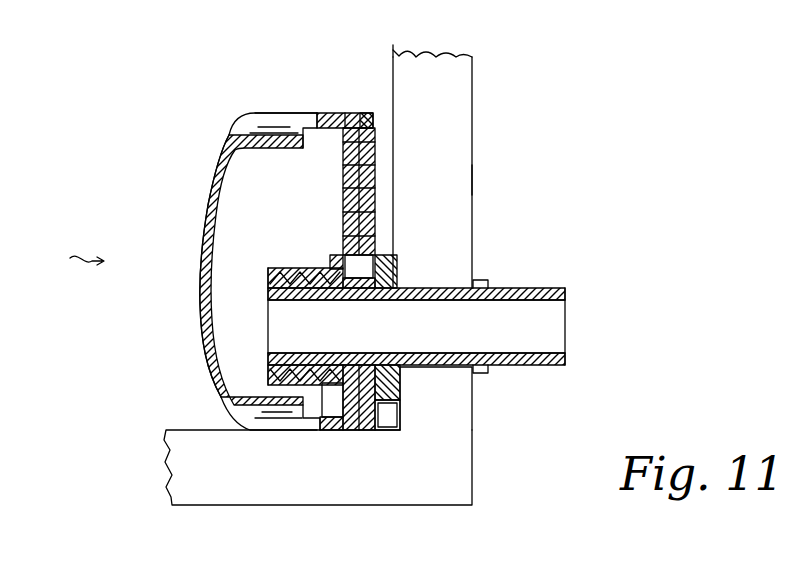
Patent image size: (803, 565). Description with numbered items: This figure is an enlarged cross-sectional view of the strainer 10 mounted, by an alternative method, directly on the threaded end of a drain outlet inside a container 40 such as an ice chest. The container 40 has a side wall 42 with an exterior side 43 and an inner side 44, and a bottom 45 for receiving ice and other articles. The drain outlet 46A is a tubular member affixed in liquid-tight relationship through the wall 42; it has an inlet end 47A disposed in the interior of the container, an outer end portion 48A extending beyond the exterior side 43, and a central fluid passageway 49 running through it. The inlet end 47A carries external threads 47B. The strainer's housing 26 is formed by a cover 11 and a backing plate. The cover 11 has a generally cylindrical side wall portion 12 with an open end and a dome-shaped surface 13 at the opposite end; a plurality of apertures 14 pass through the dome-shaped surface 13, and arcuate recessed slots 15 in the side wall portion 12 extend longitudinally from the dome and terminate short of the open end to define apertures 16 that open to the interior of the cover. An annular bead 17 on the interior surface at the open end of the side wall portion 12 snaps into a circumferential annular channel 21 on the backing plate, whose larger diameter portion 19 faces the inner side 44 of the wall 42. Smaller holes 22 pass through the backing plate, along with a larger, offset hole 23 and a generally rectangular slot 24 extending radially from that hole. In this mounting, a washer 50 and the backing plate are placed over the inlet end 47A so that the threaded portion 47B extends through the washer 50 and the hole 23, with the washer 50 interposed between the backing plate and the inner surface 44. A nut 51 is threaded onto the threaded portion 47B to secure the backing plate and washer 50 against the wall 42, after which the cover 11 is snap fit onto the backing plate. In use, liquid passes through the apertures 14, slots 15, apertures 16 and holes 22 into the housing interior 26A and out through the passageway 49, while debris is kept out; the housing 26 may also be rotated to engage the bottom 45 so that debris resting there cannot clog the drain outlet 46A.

The strainer 10 is at (67, 257).
The cover 11 is at (266, 113).
The cylindrical side wall portion 12 is at (297, 113).
The dome-shaped surface 13 is at (203, 274).
The apertures 14 is at (210, 164).
The arcuate recessed slots 15 is at (262, 130).
The apertures 16 is at (320, 140).
The annular bead 17 is at (353, 113).
The circumferential annular channel 21 is at (353, 113).
The larger diameter portion 19 is at (375, 120).
The smaller holes 22 is at (368, 186).
The rectangular slot 24 is at (378, 258).
The housing 26 is at (232, 393).
The housing interior 26A is at (298, 222).
The inlet end 47A is at (268, 297).
The external threads 47B is at (316, 270).
The larger diameter hole 23 is at (395, 384).
The washer 50 is at (392, 407).
The nut 51 is at (243, 402).
The container 40 is at (473, 119).
The side wall 42 is at (466, 227).
The exterior side 43 is at (473, 178).
The inner side 44 is at (397, 77).
The bottom 45 is at (333, 493).
The drain outlet 46A is at (443, 288).
The outer end portion 48A is at (537, 288).
The central fluid passageway 49 is at (487, 340).